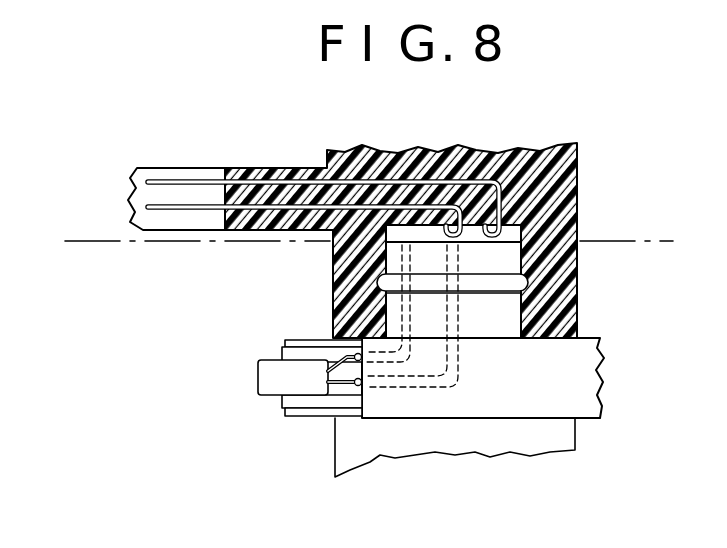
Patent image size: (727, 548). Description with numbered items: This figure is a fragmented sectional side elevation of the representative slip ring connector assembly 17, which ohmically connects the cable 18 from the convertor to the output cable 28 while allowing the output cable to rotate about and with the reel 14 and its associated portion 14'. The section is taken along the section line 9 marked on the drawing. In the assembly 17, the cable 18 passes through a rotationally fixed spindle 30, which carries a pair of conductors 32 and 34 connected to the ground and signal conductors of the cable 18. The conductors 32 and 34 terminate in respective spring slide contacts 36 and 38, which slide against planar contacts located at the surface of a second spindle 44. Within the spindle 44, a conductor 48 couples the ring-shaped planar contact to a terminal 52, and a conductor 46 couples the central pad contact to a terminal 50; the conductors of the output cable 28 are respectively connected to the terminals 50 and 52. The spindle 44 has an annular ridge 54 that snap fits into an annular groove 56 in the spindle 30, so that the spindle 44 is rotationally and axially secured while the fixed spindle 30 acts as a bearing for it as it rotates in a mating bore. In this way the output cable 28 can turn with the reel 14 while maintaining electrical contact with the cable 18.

The section line 9- 9 is at (90, 216).
The reel 14 is at (149, 393).
The reel portion 14' is at (506, 407).
The slip ring connector assembly 17 is at (269, 128).
The cable 18 is at (194, 167).
The output cable 28 is at (282, 405).
The spindle 30 is at (578, 152).
The conductor 32 is at (398, 180).
The conductor 34 is at (472, 193).
The spring slide contact 36 is at (578, 188).
The spring slide contact 38 is at (440, 236).
The spindle 44 is at (378, 300).
The conductor 46 is at (487, 375).
The conductor 48 is at (420, 388).
The terminal 50 is at (357, 388).
The terminal 52 is at (353, 353).
The annular ridge 54 is at (378, 282).
The annular groove 56 is at (510, 302).